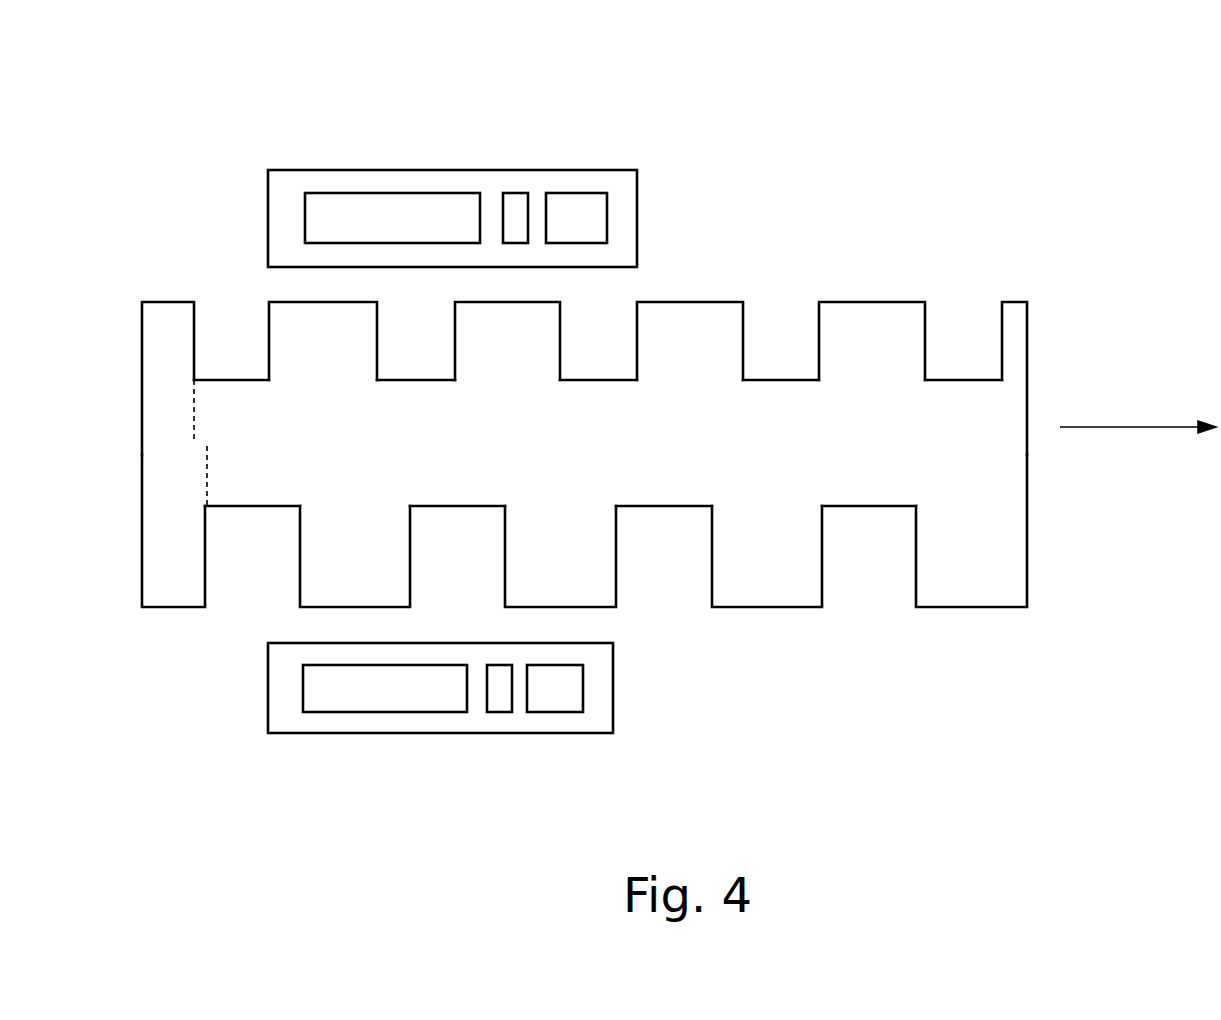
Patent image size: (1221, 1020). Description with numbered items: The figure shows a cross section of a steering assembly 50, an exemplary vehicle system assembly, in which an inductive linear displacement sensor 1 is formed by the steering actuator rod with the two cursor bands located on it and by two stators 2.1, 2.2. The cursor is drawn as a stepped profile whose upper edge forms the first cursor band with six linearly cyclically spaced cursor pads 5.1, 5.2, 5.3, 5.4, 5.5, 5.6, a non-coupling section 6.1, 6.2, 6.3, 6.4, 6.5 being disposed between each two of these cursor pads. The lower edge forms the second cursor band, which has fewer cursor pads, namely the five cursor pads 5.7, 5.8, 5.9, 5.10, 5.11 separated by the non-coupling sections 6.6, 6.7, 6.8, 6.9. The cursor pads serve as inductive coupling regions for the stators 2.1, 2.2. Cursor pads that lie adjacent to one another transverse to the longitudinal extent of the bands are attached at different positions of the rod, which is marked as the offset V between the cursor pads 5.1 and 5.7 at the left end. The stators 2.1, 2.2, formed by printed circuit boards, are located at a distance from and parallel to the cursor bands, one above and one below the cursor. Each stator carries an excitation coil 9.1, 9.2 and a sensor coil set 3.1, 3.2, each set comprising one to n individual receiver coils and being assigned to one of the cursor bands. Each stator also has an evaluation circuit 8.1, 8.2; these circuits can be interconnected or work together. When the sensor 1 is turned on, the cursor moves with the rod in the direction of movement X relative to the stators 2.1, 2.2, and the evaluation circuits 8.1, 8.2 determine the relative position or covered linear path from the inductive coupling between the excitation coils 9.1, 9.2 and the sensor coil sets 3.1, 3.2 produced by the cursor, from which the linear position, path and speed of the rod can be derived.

The inductive linear displacement sensor 1 is at (973, 147).
The steering assembly 50 is at (658, 415).
The stator 2.1 is at (393, 170).
The stator 2.2 is at (345, 733).
The sensor coil set 3.1 is at (358, 193).
The sensor coil set 3.2 is at (412, 712).
The cursor pad 5.1 is at (166, 302).
The cursor pad 5.2 is at (325, 302).
The cursor pad 5.3 is at (502, 302).
The cursor pad 5.4 is at (693, 302).
The cursor pad 5.5 is at (863, 302).
The cursor pad 5.6 is at (1012, 302).
The cursor pad 5.7 is at (175, 607).
The cursor pad 5.8 is at (320, 607).
The cursor pad 5.9 is at (585, 607).
The cursor pad 5.10 is at (775, 608).
The cursor pad 5.11 is at (970, 608).
The non-coupling section 6.1 is at (247, 380).
The non-coupling section 6.2 is at (437, 380).
The non-coupling section 6.3 is at (626, 380).
The non-coupling section 6.4 is at (763, 380).
The non-coupling section 6.5 is at (947, 380).
The non-coupling section 6.6 is at (273, 507).
The non-coupling section 6.7 is at (478, 507).
The non-coupling section 6.8 is at (645, 507).
The non-coupling section 6.9 is at (852, 507).
The evaluation circuit 8.1 is at (590, 193).
The evaluation circuit 8.2 is at (553, 712).
The excitation coil 9.1 is at (520, 193).
The excitation coil 9.2 is at (500, 712).
The offset V is at (197, 443).
The direction of movement X is at (1137, 428).